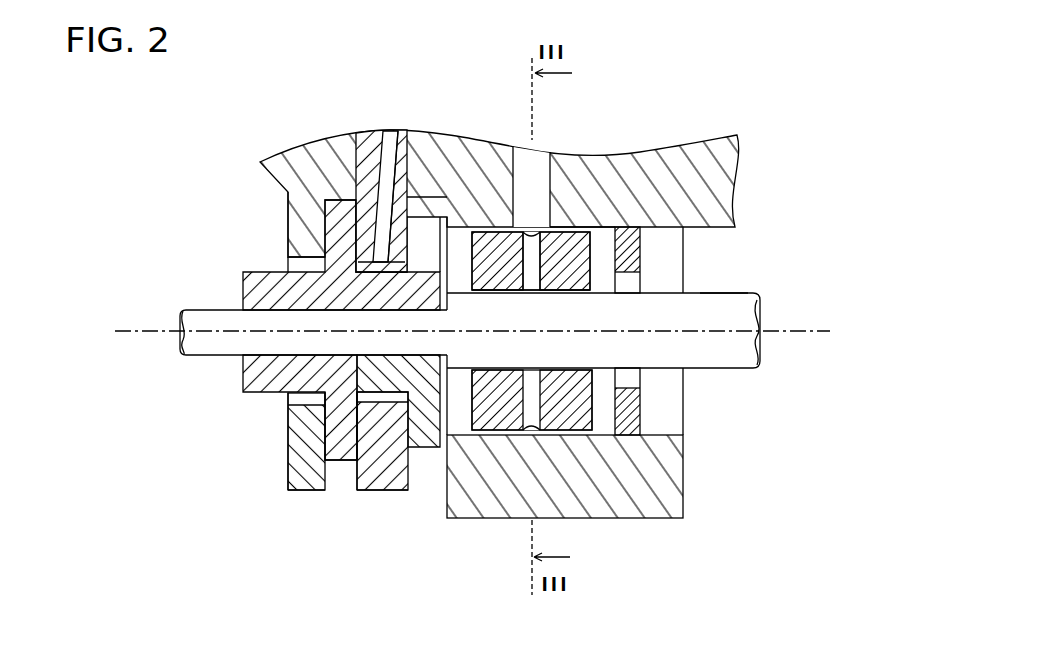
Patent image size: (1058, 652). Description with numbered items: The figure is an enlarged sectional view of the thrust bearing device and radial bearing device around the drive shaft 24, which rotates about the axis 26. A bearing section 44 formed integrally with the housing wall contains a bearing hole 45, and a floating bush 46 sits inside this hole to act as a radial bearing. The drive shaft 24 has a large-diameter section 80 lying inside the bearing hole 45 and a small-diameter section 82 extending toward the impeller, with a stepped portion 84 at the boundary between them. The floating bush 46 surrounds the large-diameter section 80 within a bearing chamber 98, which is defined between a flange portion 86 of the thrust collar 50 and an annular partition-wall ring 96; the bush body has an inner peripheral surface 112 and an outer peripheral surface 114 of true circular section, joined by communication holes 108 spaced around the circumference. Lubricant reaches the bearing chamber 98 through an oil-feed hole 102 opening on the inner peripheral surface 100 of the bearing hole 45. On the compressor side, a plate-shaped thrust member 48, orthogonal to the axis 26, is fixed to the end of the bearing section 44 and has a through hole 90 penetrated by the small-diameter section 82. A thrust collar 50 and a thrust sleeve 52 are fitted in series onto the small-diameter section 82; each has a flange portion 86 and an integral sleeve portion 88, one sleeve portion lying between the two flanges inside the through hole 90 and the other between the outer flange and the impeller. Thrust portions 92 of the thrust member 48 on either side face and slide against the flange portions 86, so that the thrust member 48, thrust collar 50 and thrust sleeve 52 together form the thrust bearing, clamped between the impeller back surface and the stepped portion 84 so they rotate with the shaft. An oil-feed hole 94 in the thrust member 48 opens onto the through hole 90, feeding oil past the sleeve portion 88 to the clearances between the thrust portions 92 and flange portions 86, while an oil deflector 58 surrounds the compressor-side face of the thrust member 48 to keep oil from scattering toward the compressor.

The drive shaft 24 is at (759, 290).
The axis 26 is at (795, 329).
The bearing section 44 is at (611, 157).
The bearing hole 45 is at (683, 420).
The floating bush 46 is at (600, 261).
The thrust member 48 is at (376, 131).
The thrust collar 50 is at (425, 456).
The thrust sleeve 52 is at (344, 469).
The oil deflector 58 is at (288, 210).
The large-diameter section 80 is at (722, 292).
The small-diameter section 82 is at (220, 309).
The stepped portion 84 is at (268, 377).
The flange portion 86 is at (314, 490).
The sleeve portion 88 is at (336, 198).
The through hole 90 is at (448, 300).
The thrust portion 92 is at (327, 200).
The oil-feed hole 94 is at (392, 131).
The partition-wall ring 96 is at (632, 437).
The bearing chamber 98 is at (592, 432).
The inner peripheral surface 100 is at (641, 404).
The oil-feed hole 102 is at (537, 152).
The communication hole 108 is at (532, 278).
The inner peripheral surface 112 is at (556, 291).
The outer peripheral surface 114 is at (577, 230).